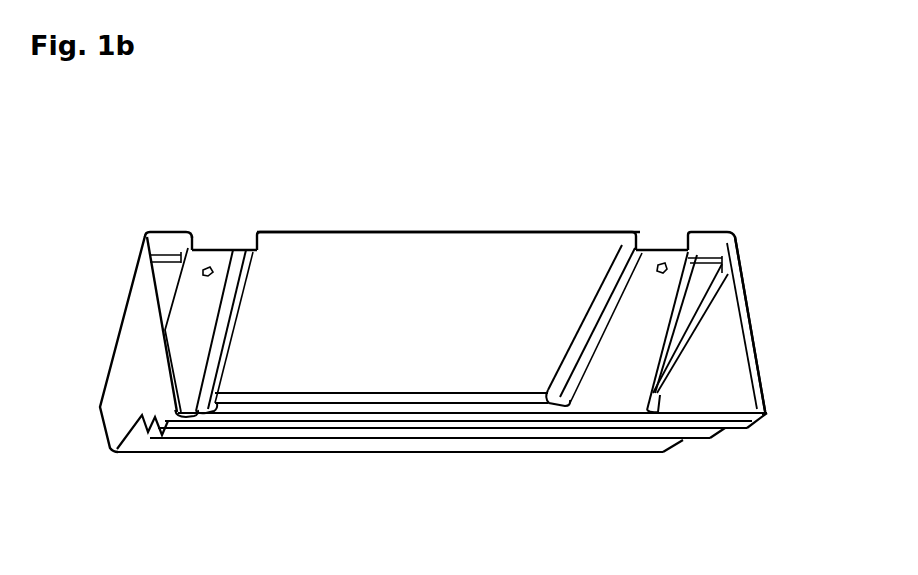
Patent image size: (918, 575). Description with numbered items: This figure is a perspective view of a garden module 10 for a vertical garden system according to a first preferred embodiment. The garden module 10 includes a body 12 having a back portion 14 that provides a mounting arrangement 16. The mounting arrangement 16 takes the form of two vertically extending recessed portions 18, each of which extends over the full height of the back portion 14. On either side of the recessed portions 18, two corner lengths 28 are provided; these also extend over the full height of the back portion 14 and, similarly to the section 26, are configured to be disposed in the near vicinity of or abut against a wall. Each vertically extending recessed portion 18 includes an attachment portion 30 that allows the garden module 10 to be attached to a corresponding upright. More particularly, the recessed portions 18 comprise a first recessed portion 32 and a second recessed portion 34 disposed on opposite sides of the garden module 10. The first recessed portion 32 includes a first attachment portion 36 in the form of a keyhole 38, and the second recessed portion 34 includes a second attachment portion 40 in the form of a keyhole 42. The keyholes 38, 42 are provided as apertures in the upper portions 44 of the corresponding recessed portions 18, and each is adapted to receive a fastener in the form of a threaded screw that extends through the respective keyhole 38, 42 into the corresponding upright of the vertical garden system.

The garden module 10 is at (672, 499).
The body 12 is at (118, 338).
The back portion 14 is at (362, 185).
The mounting arrangement 16 is at (476, 183).
The vertically extending recessed portions 18 is at (208, 218).
The section 26 is at (300, 230).
The corner lengths 28 is at (140, 230).
The attachment portion 30 is at (220, 289).
The first recessed portion 32 is at (232, 218).
The second recessed portion 34 is at (645, 223).
The first attachment portion 36 is at (205, 291).
The keyhole 38 is at (213, 270).
The second attachment portion 40 is at (662, 292).
The keyhole 42 is at (658, 268).
The upper portions 44 is at (770, 262).